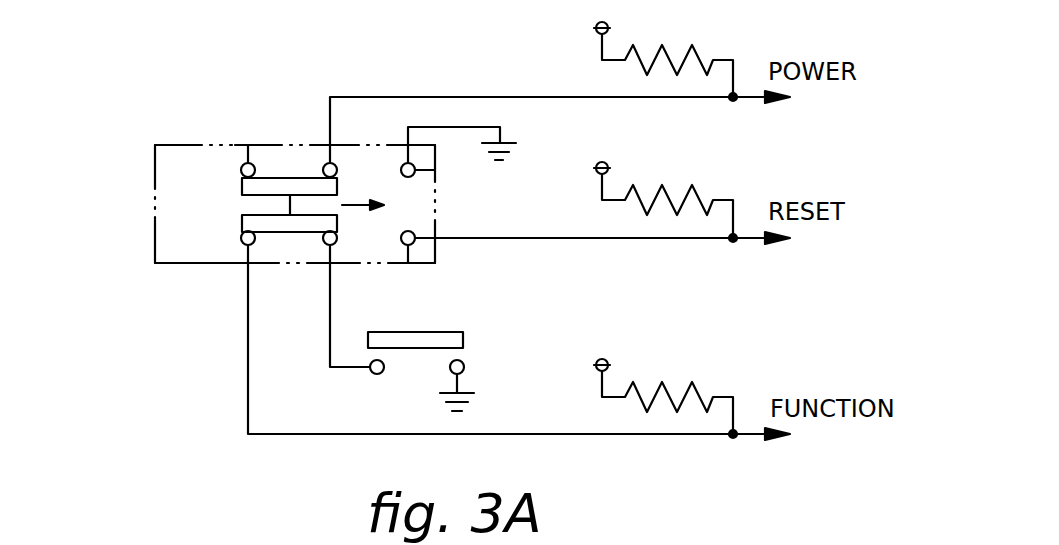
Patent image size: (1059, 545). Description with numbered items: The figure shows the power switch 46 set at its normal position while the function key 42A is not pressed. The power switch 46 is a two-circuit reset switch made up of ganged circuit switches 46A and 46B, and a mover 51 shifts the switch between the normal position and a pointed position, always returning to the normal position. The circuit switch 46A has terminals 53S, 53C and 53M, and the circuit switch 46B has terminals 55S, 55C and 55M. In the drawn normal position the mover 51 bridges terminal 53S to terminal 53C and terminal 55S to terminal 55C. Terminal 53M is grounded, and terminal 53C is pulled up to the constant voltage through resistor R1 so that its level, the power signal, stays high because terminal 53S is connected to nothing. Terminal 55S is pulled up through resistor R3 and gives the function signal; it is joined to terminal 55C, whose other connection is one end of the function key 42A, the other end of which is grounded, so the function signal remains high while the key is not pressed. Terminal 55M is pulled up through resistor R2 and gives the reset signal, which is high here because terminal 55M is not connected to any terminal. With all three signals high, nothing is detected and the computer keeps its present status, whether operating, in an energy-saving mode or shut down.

The power switch 46 is at (241, 207).
The circuit switch 46A is at (172, 135).
The circuit switch 46B is at (190, 280).
The mover 51 is at (242, 186).
The terminal 53S is at (247, 163).
The terminal 53C is at (323, 163).
The terminal 53M is at (416, 172).
The terminal 55S is at (250, 245).
The terminal 55C is at (332, 245).
The terminal 55M is at (412, 245).
The function key 42A is at (463, 337).
The resistor R1 is at (665, 58).
The resistor R2 is at (665, 199).
The resistor R3 is at (665, 396).